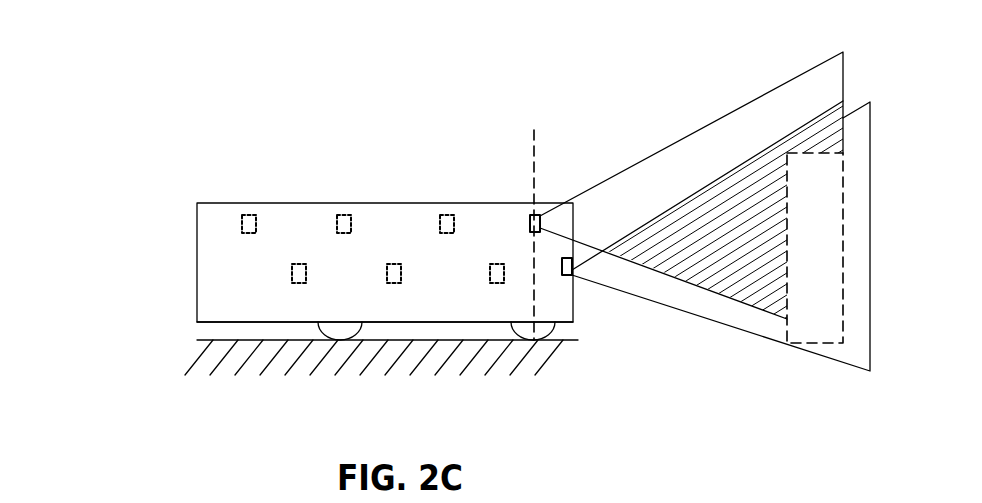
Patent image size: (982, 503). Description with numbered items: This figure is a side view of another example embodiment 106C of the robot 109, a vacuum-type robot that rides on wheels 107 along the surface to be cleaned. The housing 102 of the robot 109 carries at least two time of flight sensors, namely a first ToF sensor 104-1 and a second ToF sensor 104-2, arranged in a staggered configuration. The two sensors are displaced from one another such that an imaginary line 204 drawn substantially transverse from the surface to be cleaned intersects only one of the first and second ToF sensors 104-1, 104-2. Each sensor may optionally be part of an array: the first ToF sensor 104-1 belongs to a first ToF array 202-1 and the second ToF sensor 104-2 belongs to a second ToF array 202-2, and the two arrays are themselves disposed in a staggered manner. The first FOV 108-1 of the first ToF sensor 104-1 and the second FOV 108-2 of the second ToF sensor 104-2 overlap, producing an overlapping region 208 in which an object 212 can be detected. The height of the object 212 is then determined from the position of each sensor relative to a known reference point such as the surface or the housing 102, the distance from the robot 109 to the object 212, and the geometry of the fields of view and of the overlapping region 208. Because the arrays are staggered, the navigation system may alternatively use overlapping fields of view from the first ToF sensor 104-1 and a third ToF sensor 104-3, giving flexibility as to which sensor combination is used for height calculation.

The example embodiment of the robot 106C is at (203, 150).
The housing 102 is at (422, 203).
The first ToF sensor 104-1 is at (530, 215).
The second ToF sensor 104-2 is at (567, 275).
The third ToF sensor 104-3 is at (502, 278).
The wheels 107 is at (335, 343).
The first FOV 108-1 is at (733, 112).
The second FOV 108-2 is at (773, 339).
The robot 109 is at (468, 321).
The first ToF array 202-1 is at (185, 212).
The second ToF array 202-2 is at (185, 259).
The imaginary line 204 is at (533, 145).
The overlapping region 208 is at (692, 210).
The object 212 is at (835, 243).